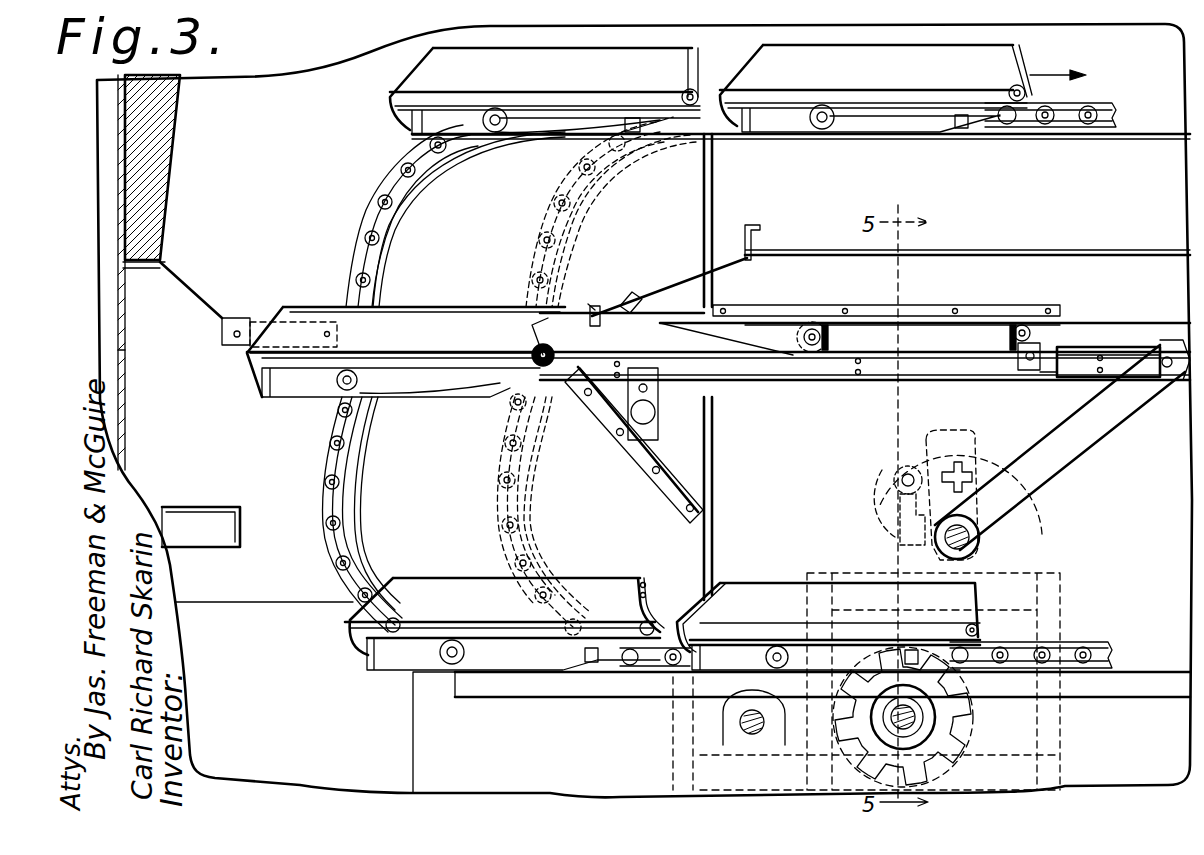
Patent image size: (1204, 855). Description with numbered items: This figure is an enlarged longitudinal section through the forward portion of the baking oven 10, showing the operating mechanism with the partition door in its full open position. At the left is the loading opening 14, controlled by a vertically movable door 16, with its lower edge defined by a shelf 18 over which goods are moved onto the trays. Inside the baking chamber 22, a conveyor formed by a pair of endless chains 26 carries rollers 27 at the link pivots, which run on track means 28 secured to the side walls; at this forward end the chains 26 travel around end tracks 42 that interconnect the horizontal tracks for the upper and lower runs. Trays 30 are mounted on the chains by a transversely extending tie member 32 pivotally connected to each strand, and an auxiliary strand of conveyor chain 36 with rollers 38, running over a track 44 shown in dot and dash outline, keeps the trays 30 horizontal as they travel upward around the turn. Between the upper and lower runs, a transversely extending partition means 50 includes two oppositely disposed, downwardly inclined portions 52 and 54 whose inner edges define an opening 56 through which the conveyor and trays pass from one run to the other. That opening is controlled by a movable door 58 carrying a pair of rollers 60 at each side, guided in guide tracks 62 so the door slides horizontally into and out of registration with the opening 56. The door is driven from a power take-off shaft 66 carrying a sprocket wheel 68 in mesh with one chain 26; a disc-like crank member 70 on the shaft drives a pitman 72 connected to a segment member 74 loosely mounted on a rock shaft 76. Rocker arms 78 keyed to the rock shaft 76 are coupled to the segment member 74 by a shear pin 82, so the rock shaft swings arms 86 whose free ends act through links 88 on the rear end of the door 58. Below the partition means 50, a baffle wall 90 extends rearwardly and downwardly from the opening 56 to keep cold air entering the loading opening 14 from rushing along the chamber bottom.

The baking oven 10 is at (108, 160).
The baking chamber 22 is at (187, 200).
The downwardly inclined portion of partition means 52 is at (176, 278).
The loading opening 14 is at (357, 454).
The vertically movable door 16 is at (128, 424).
The shelf 18 is at (195, 507).
The endless chains 26 is at (392, 172).
The rollers 27 is at (376, 228).
The trays 30 is at (683, 50).
The tie member 32 is at (492, 135).
The track means 28 is at (1022, 140).
The partition means 50 is at (798, 238).
The downwardly inclined portion of partition means 54 is at (652, 290).
The opening in partition means 56 is at (598, 305).
The movable door 58 is at (795, 320).
The rollers 60 is at (804, 337).
The guide tracks 62 is at (735, 362).
The links 88 is at (1125, 352).
The arms 86 is at (1105, 446).
The rock shaft 76 is at (968, 545).
The segment member 74 is at (1040, 517).
The rocker arms 78 is at (970, 476).
The shear pin 82 is at (950, 460).
The pitman 72 is at (895, 537).
The baffle wall 90 is at (655, 464).
The end tracks 42 is at (366, 440).
The auxiliary strand of conveyor chain 36 is at (500, 462).
The rollers 38 is at (505, 433).
The track 44 is at (535, 453).
The power take-off shaft 66 is at (906, 718).
The sprocket wheel 68 is at (958, 764).
The crank member 70 is at (815, 774).